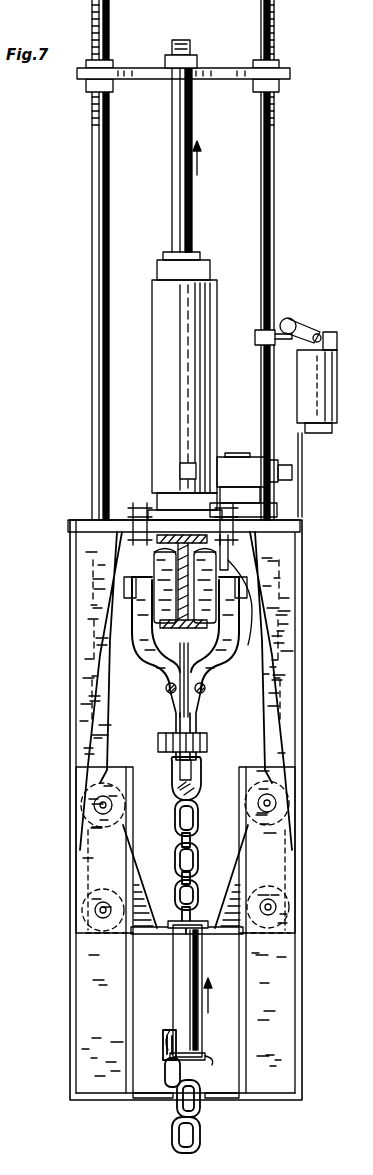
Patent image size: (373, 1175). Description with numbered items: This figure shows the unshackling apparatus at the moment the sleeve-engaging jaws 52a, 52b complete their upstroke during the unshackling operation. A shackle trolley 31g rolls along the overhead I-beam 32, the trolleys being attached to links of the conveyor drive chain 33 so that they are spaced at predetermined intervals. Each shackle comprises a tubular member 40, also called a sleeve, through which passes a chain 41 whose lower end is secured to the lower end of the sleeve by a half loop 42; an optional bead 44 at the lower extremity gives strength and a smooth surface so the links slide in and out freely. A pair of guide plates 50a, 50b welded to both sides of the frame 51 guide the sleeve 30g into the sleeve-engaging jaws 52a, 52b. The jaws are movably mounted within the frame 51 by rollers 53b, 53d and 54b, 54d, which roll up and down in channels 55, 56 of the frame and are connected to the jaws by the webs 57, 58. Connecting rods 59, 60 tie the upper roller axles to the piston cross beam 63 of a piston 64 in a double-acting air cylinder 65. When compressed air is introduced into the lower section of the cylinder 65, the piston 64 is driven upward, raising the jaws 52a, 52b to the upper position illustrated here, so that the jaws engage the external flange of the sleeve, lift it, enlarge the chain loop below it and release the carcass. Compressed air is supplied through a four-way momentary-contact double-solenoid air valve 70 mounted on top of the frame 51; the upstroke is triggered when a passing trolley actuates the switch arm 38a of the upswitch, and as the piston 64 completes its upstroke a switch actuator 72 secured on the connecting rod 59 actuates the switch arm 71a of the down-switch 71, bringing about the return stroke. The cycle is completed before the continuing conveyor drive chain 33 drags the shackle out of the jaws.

The sleeve 30g is at (203, 1047).
The shackle trolley 31g is at (138, 660).
The I-beam 32 is at (182, 592).
The conveyor drive chain 33 is at (205, 690).
The switch arm 38a is at (241, 602).
The tubular member 40 is at (173, 985).
The chain 41 is at (197, 827).
The half loop 42 is at (170, 1033).
The bead 44 is at (205, 1060).
The guide plate 50a is at (220, 1099).
The guide plate 50b is at (152, 1099).
The frame 51 is at (70, 607).
The sleeve-engaging jaw 52a is at (216, 935).
The sleeve-engaging jaw 52b is at (157, 935).
The roller 53b is at (300, 774).
The roller 53d is at (302, 893).
The roller 54b is at (82, 783).
The roller 54d is at (87, 925).
The channel 55 is at (277, 1015).
The channel 56 is at (85, 1030).
The web 57 is at (229, 883).
The web 58 is at (143, 880).
The connecting rod 59 is at (274, 263).
The connecting rod 60 is at (92, 269).
The piston cross beam 63 is at (218, 80).
The piston 64 is at (193, 215).
The double-acting air cylinder 65 is at (152, 386).
The air valve 70 is at (238, 453).
The down-switch 71 is at (334, 391).
The switch arm 71a is at (302, 321).
The switch actuator 72 is at (256, 334).